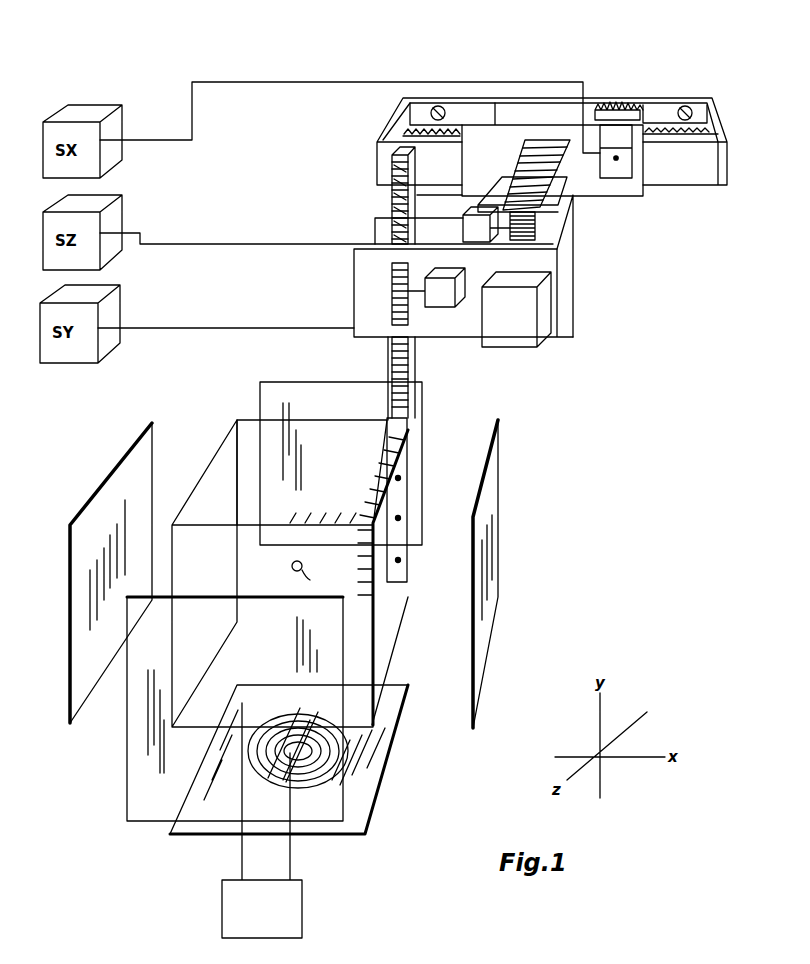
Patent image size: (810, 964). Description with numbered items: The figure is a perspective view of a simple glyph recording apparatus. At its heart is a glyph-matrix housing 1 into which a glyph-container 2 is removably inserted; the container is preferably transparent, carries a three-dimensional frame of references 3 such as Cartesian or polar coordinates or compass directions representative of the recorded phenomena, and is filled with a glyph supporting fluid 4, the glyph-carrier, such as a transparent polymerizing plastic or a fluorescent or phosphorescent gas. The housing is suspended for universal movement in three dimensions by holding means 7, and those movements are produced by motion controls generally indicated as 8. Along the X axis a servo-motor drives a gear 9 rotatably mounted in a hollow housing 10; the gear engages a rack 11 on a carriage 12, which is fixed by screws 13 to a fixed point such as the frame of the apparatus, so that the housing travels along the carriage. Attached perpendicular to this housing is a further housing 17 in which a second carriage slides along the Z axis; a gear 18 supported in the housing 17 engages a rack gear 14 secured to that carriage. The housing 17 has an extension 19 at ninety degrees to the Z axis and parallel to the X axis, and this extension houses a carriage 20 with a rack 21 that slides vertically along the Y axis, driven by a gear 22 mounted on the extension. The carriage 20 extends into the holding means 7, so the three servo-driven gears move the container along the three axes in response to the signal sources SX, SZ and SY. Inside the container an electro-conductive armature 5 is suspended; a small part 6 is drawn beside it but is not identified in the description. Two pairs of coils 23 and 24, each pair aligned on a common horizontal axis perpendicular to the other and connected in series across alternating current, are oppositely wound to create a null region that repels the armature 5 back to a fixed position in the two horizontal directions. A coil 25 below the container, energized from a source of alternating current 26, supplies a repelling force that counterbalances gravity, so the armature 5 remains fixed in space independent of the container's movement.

The glyph-matrix housing 1 is at (406, 566).
The glyph-container 2 is at (212, 480).
The frame of references 3 is at (360, 510).
The glyph supporting fluid 4 is at (240, 425).
The armature 5 is at (293, 567).
The probe lead 6 is at (309, 584).
The holding means 7 is at (408, 428).
The motion controls 8 is at (540, 326).
The gear 9 is at (615, 100).
The housing 10 is at (497, 118).
The rack 11 is at (662, 125).
The carriage 12 is at (695, 178).
The screws 13 is at (440, 100).
The rack gear 14 is at (540, 142).
The housing 17 is at (565, 258).
The gear 18 is at (540, 245).
The extension 19 is at (383, 230).
The carriage 20 is at (392, 185).
The rack 21 is at (393, 218).
The gear 22 is at (390, 290).
The pair of coils 23 is at (72, 612).
The pair of coils 24 is at (422, 400).
The coil 25 is at (360, 760).
The source of alternating current 26 is at (262, 820).